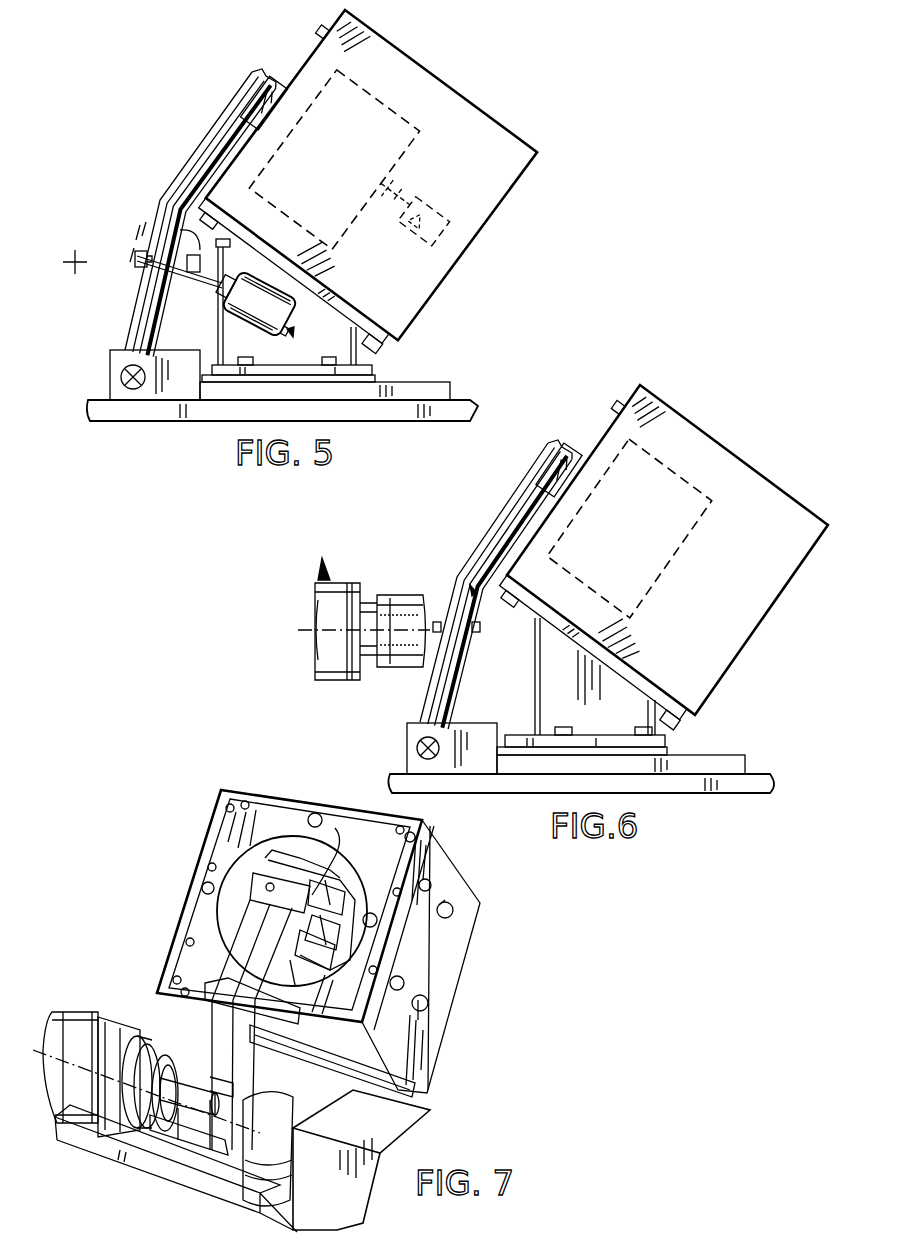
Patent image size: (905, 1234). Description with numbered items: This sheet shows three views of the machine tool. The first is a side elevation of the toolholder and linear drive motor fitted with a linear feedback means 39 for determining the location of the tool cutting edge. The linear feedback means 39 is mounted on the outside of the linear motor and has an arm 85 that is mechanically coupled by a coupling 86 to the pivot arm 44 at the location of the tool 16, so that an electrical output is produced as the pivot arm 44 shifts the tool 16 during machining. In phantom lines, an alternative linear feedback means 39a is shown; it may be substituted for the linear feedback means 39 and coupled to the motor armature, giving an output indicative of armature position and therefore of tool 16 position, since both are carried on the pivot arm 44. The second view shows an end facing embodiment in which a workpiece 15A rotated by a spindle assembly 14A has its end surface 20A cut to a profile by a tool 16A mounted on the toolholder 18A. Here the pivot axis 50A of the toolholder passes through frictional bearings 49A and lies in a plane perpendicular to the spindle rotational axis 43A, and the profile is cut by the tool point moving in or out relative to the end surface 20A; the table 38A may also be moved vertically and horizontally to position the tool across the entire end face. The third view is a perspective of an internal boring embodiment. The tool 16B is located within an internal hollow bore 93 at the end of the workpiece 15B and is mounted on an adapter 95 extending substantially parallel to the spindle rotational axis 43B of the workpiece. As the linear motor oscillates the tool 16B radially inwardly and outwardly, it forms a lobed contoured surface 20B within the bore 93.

In FIG. 5, the pivot arm 44 is at (196, 160).
In FIG. 5, the coupling 86 is at (196, 248).
In FIG. 5, the tool 16 is at (133, 260).
In FIG. 5, the arm 85 is at (216, 278).
In FIG. 5, the linear feedback means 39 is at (298, 332).
In FIG. 5, the linear feedback means 39a is at (432, 284).
In FIG. 6, the toolholder 18A is at (512, 518).
In FIG. 6, the tool 16A is at (434, 620).
In FIG. 6, the spindle assembly 14A is at (324, 560).
In FIG. 6, the workpiece 15A is at (395, 596).
In FIG. 6, the spindle rotational axis 43A is at (298, 630).
In FIG. 6, the end surface 20A is at (414, 662).
In FIG. 6, the pivot axis 50A is at (416, 748).
In FIG. 6, the frictional bearings 49A is at (450, 752).
In FIG. 6, the table 38A is at (745, 784).
In FIG. 7, the spindle rotational axis 43B is at (58, 1030).
In FIG. 7, the workpiece 15B is at (128, 1052).
In FIG. 7, the bore 93 is at (148, 1056).
In FIG. 7, the contoured surface 20B is at (198, 1062).
In FIG. 7, the adapter 95 is at (230, 1078).
In FIG. 7, the tool 16B is at (153, 1150).